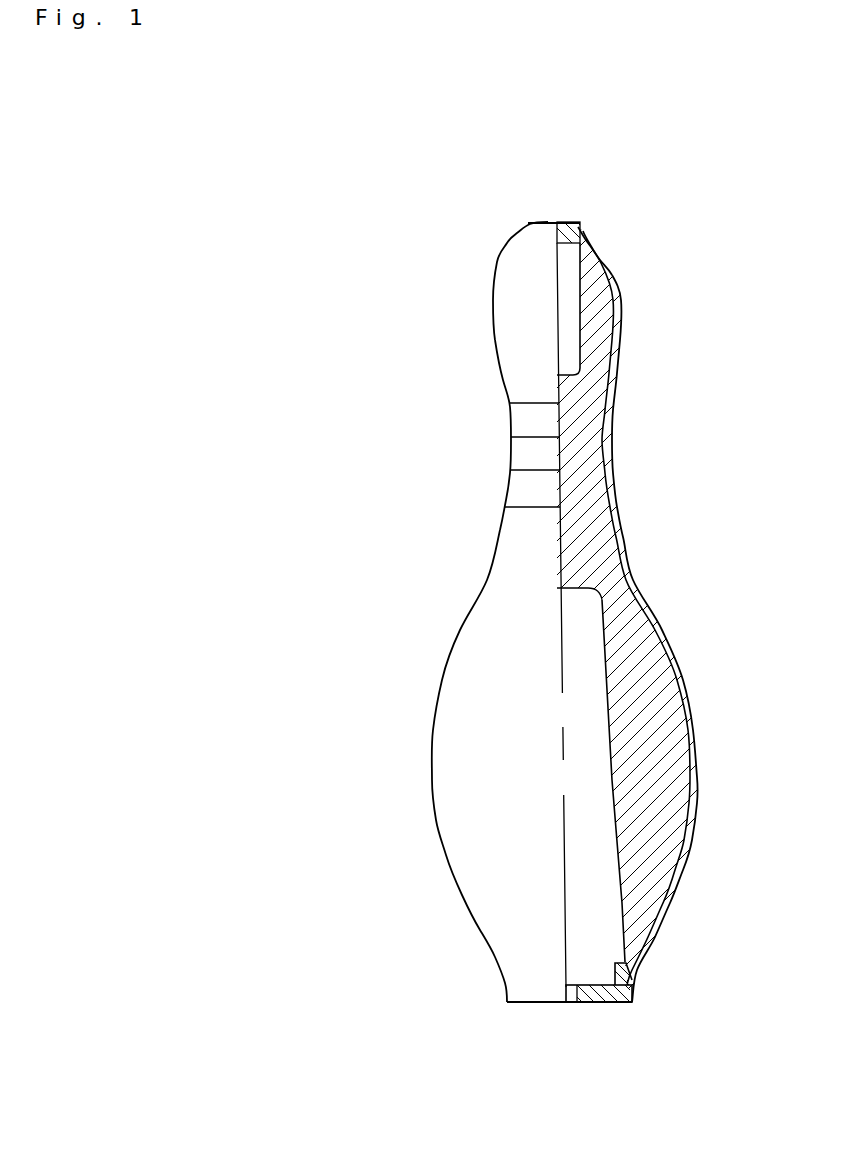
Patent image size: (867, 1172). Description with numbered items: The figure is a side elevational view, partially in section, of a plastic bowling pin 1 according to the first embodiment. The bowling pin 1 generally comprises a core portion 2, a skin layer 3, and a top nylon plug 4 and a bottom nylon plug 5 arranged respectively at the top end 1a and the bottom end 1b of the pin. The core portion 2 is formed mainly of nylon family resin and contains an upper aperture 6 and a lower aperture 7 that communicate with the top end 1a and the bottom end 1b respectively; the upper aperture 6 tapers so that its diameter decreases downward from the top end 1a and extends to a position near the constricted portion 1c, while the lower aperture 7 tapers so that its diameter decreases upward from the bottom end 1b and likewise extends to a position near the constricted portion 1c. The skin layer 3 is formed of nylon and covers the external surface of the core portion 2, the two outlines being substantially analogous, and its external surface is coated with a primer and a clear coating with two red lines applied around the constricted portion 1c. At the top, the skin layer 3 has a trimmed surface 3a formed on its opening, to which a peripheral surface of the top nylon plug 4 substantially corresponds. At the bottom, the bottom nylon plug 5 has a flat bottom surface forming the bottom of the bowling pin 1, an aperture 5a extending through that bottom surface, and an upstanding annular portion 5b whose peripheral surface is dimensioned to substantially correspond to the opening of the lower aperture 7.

The plastic bowling pin 1 is at (611, 197).
The top end 1a is at (513, 235).
The bottom end 1b is at (532, 1003).
The constricted portion 1c is at (510, 467).
The core portion 2 is at (583, 440).
The skin layer 3 is at (623, 280).
The trimmed surface 3a is at (575, 222).
The top nylon plug 4 is at (562, 222).
The bottom nylon plug 5 is at (617, 1003).
The aperture 5a is at (572, 1002).
The upstanding annular portion 5b is at (627, 965).
The upper aperture 6 is at (600, 340).
The lower aperture 7 is at (605, 903).